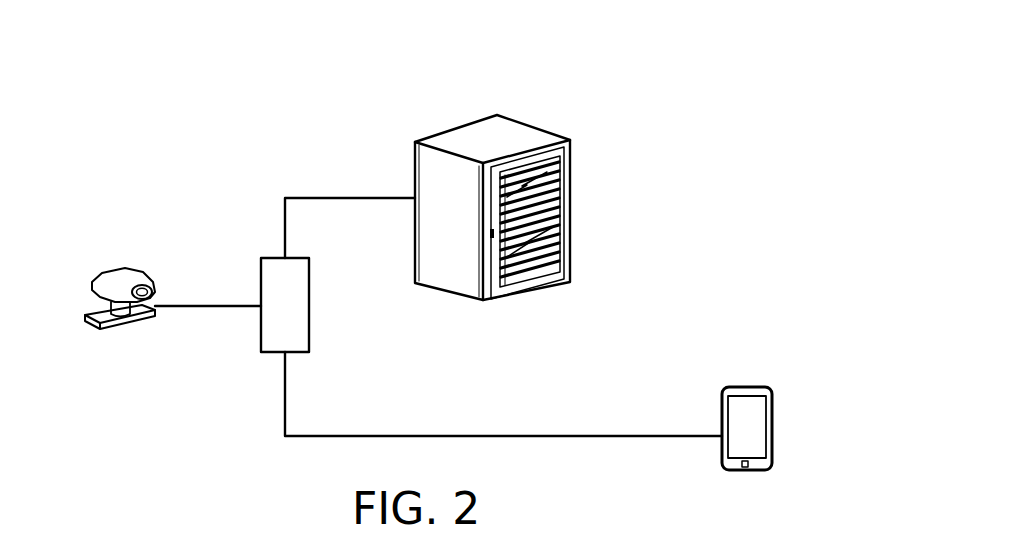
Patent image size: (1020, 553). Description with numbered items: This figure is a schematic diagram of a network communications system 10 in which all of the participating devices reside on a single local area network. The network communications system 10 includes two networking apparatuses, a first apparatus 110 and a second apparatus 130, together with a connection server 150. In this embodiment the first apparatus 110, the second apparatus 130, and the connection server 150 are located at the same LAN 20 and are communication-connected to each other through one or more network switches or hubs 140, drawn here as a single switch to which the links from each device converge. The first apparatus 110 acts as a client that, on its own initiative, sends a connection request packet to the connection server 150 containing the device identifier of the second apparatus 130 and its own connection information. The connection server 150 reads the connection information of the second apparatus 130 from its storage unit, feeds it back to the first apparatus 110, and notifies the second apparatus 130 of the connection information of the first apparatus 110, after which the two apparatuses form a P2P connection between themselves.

The network communications system 10 is at (758, 55).
The local area network (LAN) 20 is at (204, 38).
The first apparatus 110 is at (772, 408).
The second apparatus 130 is at (95, 279).
The network switch or hub 140 is at (308, 347).
The connection server 150 is at (570, 143).